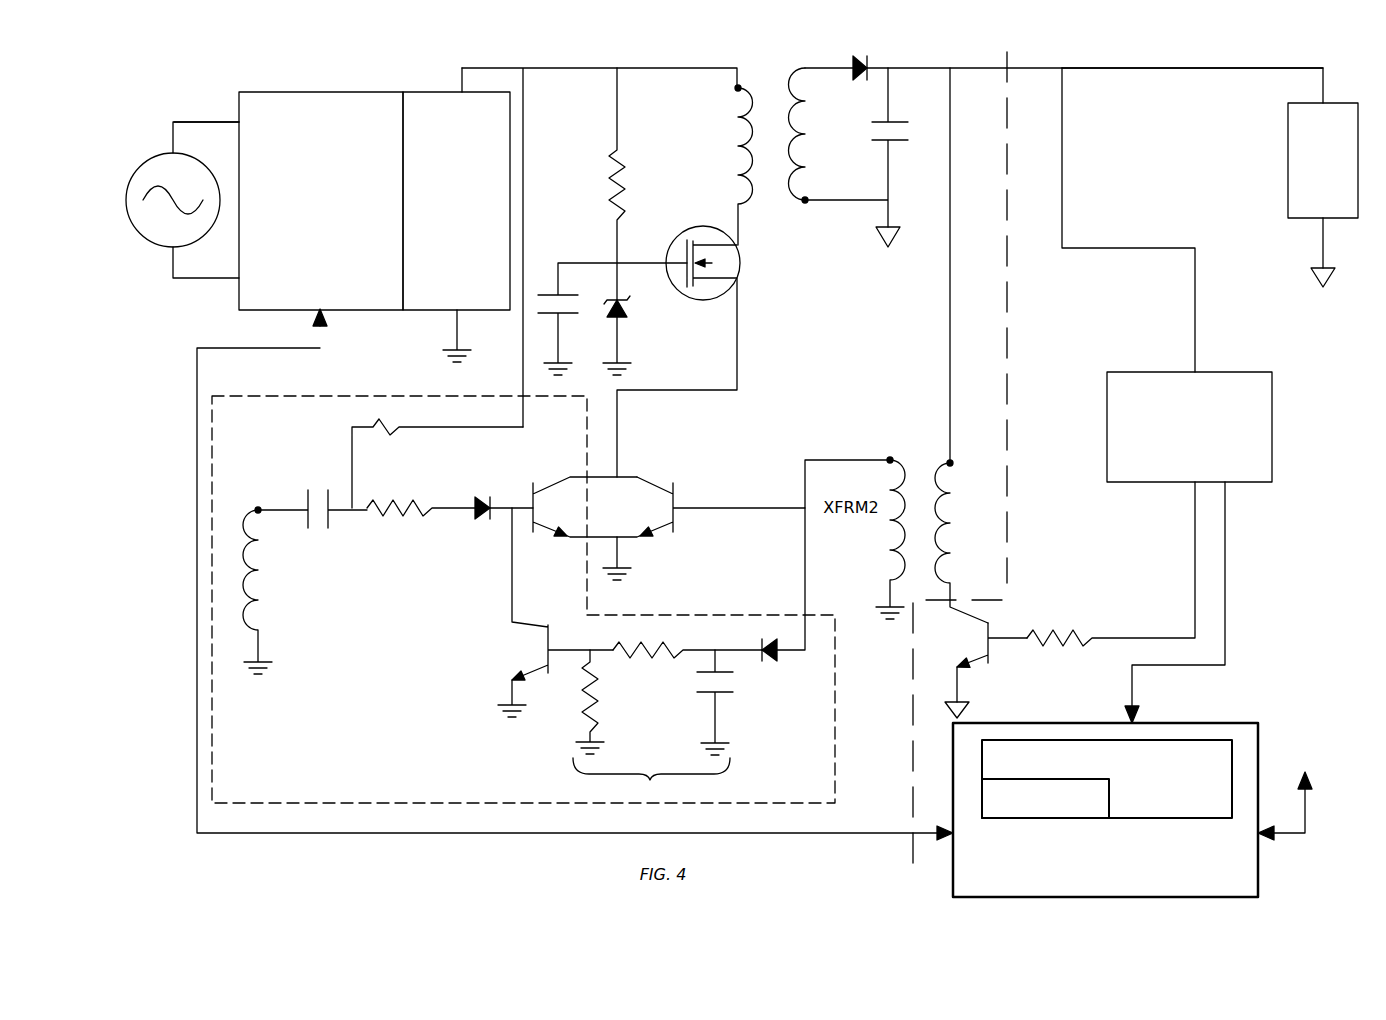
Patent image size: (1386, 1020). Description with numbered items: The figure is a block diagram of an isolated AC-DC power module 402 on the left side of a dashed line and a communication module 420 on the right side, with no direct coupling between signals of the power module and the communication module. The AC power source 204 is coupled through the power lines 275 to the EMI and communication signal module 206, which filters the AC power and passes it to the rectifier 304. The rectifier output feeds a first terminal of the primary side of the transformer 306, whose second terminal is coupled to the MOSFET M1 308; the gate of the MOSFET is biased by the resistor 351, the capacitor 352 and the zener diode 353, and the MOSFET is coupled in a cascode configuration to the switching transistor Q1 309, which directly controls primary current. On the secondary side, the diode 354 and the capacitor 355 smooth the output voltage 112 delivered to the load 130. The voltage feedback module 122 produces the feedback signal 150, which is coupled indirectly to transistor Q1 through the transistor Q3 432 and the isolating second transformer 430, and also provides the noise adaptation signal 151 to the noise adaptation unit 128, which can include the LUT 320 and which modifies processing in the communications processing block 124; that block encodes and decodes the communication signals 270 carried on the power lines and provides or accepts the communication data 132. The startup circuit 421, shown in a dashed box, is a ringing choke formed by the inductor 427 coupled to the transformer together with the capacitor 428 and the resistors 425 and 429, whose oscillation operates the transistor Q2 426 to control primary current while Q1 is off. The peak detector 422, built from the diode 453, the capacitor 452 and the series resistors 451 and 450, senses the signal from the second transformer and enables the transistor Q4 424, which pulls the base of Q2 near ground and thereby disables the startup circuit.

The power lines 275 is at (210, 118).
The AC power source 204 is at (166, 250).
The EMI and communication signal module 206 is at (321, 201).
The rectifier 304 is at (456, 215).
The communication signals 270 is at (879, 828).
The resistor 351 is at (602, 178).
The capacitor 352 is at (544, 290).
The zener diode 353 is at (630, 312).
The transformer 306 is at (742, 101).
The MOSFET M1 308 is at (740, 245).
The diode 354 is at (860, 80).
The capacitor 355 is at (900, 143).
The AC-DC power module 402 is at (896, 458).
The startup circuit 421 is at (523, 599).
The resistor 425 is at (400, 417).
The inductor 427 is at (262, 555).
The capacitor 428 is at (309, 499).
The resistor 429 is at (392, 522).
The transistor Q2 426 is at (534, 488).
The switching transistor Q1 309 is at (657, 478).
The transistor Q4 424 is at (515, 624).
The resistor 450 is at (578, 712).
The resistor 451 is at (635, 670).
The capacitor 452 is at (735, 693).
The diode 453 is at (774, 663).
The peak detector 422 is at (651, 775).
The second transformer 430 is at (958, 504).
The transistor Q3 432 is at (1000, 658).
The feedback signal 150 is at (1125, 634).
The noise adaptation signal 151 is at (1228, 584).
The communication module 420 is at (1169, 220).
The output voltage 112 is at (1222, 103).
The load 130 is at (1323, 195).
The voltage feedback module 122 is at (1189, 427).
The communications processing block 124 is at (1105, 810).
The noise adaptation unit 128 is at (1107, 779).
The LUT 320 is at (1045, 798).
The communication data 132 is at (1296, 766).